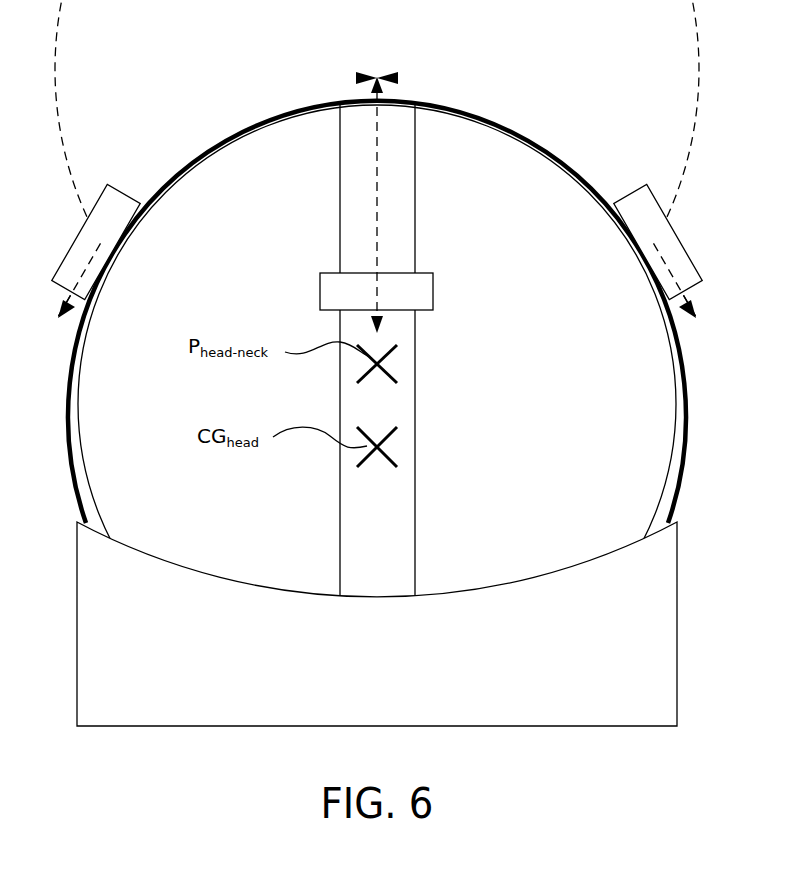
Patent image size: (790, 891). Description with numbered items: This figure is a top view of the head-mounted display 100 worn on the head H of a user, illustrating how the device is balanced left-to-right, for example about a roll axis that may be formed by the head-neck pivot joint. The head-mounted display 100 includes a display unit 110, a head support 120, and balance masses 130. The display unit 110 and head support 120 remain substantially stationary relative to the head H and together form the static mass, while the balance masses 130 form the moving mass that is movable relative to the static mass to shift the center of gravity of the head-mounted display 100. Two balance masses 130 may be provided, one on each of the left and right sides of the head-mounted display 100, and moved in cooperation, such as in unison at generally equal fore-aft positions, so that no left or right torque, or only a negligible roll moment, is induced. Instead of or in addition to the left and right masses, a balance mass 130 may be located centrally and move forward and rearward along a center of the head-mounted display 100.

The head-mounted display 100 is at (125, 104).
The display unit 110 is at (360, 666).
The head support 120 is at (225, 141).
The balance mass 130 is at (75, 238).
The head H is at (178, 180).